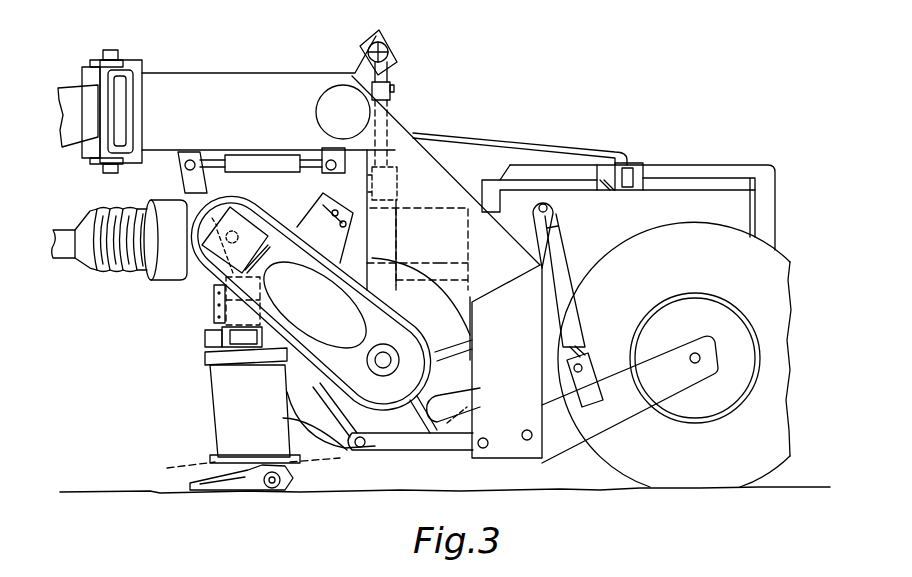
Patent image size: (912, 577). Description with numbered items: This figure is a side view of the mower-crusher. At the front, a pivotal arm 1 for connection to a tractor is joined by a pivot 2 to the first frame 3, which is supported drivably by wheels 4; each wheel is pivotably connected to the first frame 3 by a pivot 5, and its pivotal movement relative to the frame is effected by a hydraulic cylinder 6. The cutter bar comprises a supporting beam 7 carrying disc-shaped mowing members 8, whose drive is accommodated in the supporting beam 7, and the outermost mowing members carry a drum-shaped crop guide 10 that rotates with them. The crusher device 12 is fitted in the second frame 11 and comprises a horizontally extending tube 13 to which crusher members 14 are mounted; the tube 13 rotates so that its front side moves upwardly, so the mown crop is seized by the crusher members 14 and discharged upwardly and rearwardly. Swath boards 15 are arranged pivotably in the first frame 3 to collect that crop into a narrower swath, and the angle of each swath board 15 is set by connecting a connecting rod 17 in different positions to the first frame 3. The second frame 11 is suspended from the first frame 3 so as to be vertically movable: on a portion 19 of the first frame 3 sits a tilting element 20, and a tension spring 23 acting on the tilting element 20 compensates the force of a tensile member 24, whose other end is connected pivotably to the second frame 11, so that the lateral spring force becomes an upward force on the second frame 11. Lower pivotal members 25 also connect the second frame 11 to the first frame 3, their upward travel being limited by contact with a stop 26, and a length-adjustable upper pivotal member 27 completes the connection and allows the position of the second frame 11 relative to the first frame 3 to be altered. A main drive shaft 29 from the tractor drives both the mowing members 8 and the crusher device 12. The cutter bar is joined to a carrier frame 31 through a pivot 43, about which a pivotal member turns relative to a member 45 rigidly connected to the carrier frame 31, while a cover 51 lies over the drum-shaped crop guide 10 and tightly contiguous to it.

The pivotal arm 1 is at (74, 113).
The pivot 2 is at (110, 48).
The first frame 3 is at (267, 43).
The wheels 4 is at (645, 245).
The pivots 5 is at (527, 441).
The hydraulic cylinder 6 is at (562, 270).
The supporting beam 7 is at (250, 493).
The mowing members 8 is at (212, 457).
The drum-shaped crop guide 10 is at (225, 390).
The second frame 11 is at (382, 242).
The crusher device 12 is at (462, 349).
The tube 13 is at (368, 352).
The crusher members 14 is at (287, 395).
The swath boards 15 is at (695, 198).
The connecting rod 17 is at (527, 120).
The portion of first frame 19 is at (325, 102).
The tilting element 20 is at (382, 73).
The tension spring 23 is at (373, 45).
The tensile member 24 is at (390, 100).
The lower pivotal members 25 is at (453, 440).
The stop 26 is at (473, 395).
The upper pivotal member 27 is at (253, 158).
The main drive shaft 29 is at (60, 230).
The carrier frame 31 is at (213, 307).
The pivot 43 is at (207, 340).
The member 45 is at (208, 323).
The cover 51 is at (207, 360).